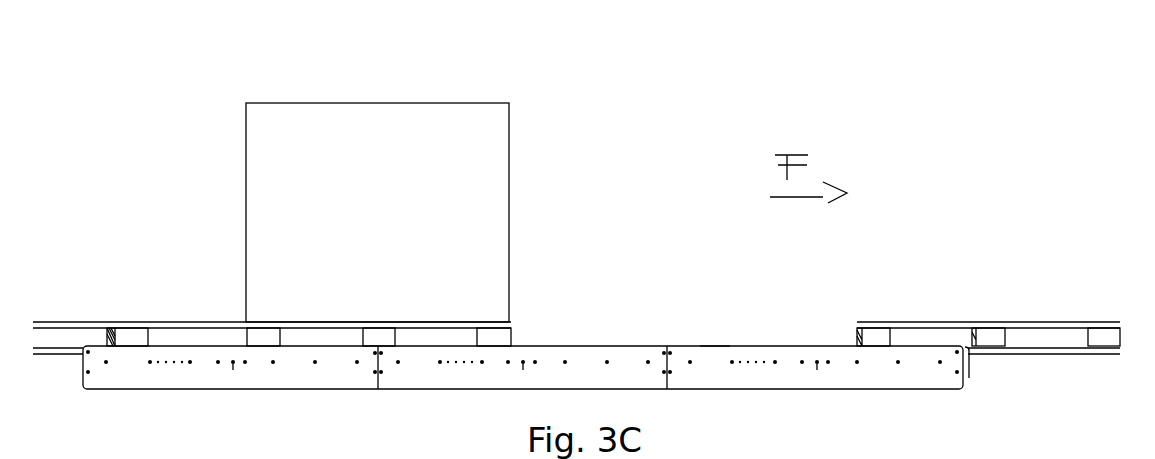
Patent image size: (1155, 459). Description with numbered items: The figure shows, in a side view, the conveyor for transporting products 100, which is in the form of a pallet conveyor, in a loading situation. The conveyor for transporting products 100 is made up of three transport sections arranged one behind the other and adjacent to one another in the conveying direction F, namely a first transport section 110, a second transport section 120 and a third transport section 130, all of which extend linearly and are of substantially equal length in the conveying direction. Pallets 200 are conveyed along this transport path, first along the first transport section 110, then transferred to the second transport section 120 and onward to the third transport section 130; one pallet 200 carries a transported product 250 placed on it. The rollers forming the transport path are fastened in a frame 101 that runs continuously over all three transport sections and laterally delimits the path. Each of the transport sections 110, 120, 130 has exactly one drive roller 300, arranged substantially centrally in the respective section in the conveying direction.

The conveyor for transporting products 100 is at (840, 112).
The frame 101 is at (713, 353).
The first transport section 110 is at (378, 390).
The second transport section 120 is at (667, 390).
The third transport section 130 is at (960, 390).
The pallet 200 is at (138, 323).
The transported product 250 is at (504, 103).
The drive roller 300 is at (229, 339).